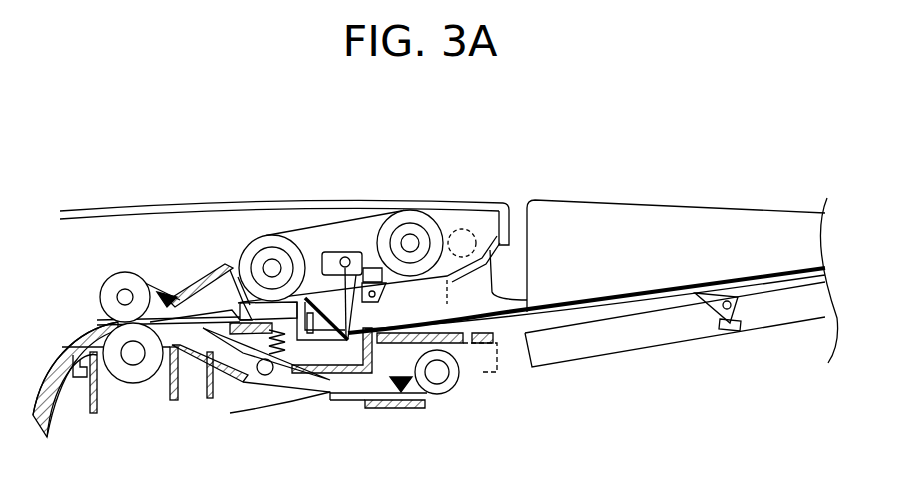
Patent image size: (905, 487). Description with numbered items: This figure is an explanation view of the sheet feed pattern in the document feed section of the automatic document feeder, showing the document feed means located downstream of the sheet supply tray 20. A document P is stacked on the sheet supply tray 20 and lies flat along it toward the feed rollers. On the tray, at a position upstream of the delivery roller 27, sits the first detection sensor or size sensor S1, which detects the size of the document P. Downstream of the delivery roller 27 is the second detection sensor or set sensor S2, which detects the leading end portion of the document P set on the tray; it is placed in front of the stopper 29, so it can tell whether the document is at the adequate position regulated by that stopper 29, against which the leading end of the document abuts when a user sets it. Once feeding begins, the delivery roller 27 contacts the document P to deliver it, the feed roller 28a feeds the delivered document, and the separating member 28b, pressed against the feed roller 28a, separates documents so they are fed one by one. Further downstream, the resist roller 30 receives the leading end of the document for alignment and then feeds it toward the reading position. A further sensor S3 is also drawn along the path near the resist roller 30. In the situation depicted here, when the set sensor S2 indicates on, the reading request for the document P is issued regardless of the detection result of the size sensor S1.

The resist roller 30 is at (108, 273).
The third sensor S3 is at (165, 292).
The feed roller 28a is at (257, 236).
The stopper 29 is at (333, 252).
The delivery roller 27 is at (410, 210).
The second detection sensor (set sensor) S2 is at (380, 300).
The document P is at (617, 300).
The sheet supply tray 20 is at (588, 343).
The first detection sensor (size sensor) S1 is at (705, 323).
The separating member 28b is at (252, 322).